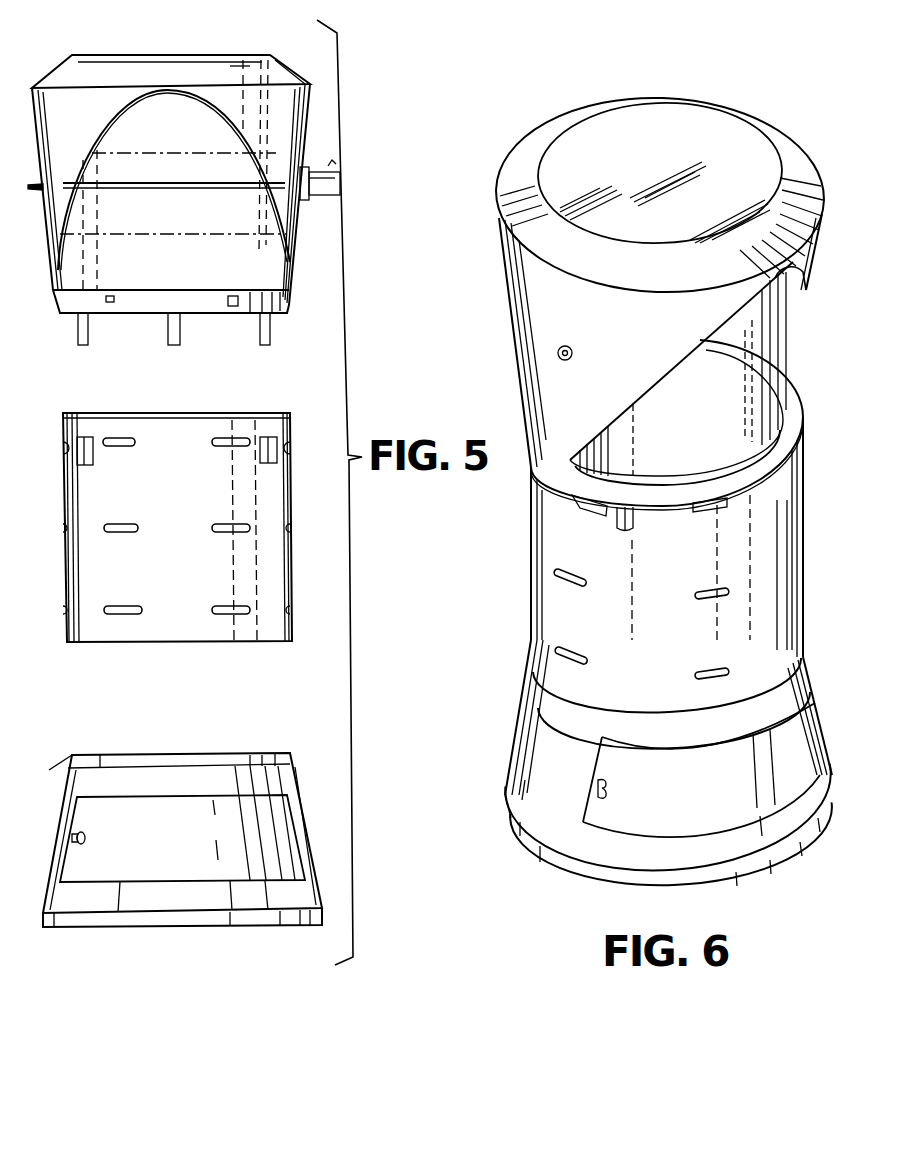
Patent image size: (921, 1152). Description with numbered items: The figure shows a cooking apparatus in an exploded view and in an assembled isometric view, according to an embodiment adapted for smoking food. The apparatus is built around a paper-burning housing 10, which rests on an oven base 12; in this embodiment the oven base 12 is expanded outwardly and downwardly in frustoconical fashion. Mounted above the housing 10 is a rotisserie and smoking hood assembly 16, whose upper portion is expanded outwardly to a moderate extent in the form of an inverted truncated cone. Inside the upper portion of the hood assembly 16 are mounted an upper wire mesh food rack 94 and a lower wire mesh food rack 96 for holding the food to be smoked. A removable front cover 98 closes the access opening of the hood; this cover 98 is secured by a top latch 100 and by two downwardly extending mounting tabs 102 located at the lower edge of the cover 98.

In FIG. 5, the paper-burning housing 10 is at (296, 537).
In FIG. 6, the paper-burning housing 10 is at (528, 571).
In FIG. 5, the oven base 12 is at (300, 786).
In FIG. 6, the oven base 12 is at (503, 773).
In FIG. 5, the rotisserie and smoking hood assembly 16 is at (304, 226).
In FIG. 6, the rotisserie and smoking hood assembly 16 is at (502, 314).
In FIG. 5, the upper wire mesh food rack 94 is at (147, 150).
In FIG. 5, the lower wire mesh food rack 96 is at (147, 237).
In FIG. 5, the removable front cover 98 is at (270, 332).
In FIG. 5, the top latch 100 is at (165, 90).
In FIG. 5, the mounting tabs 102 is at (233, 308).